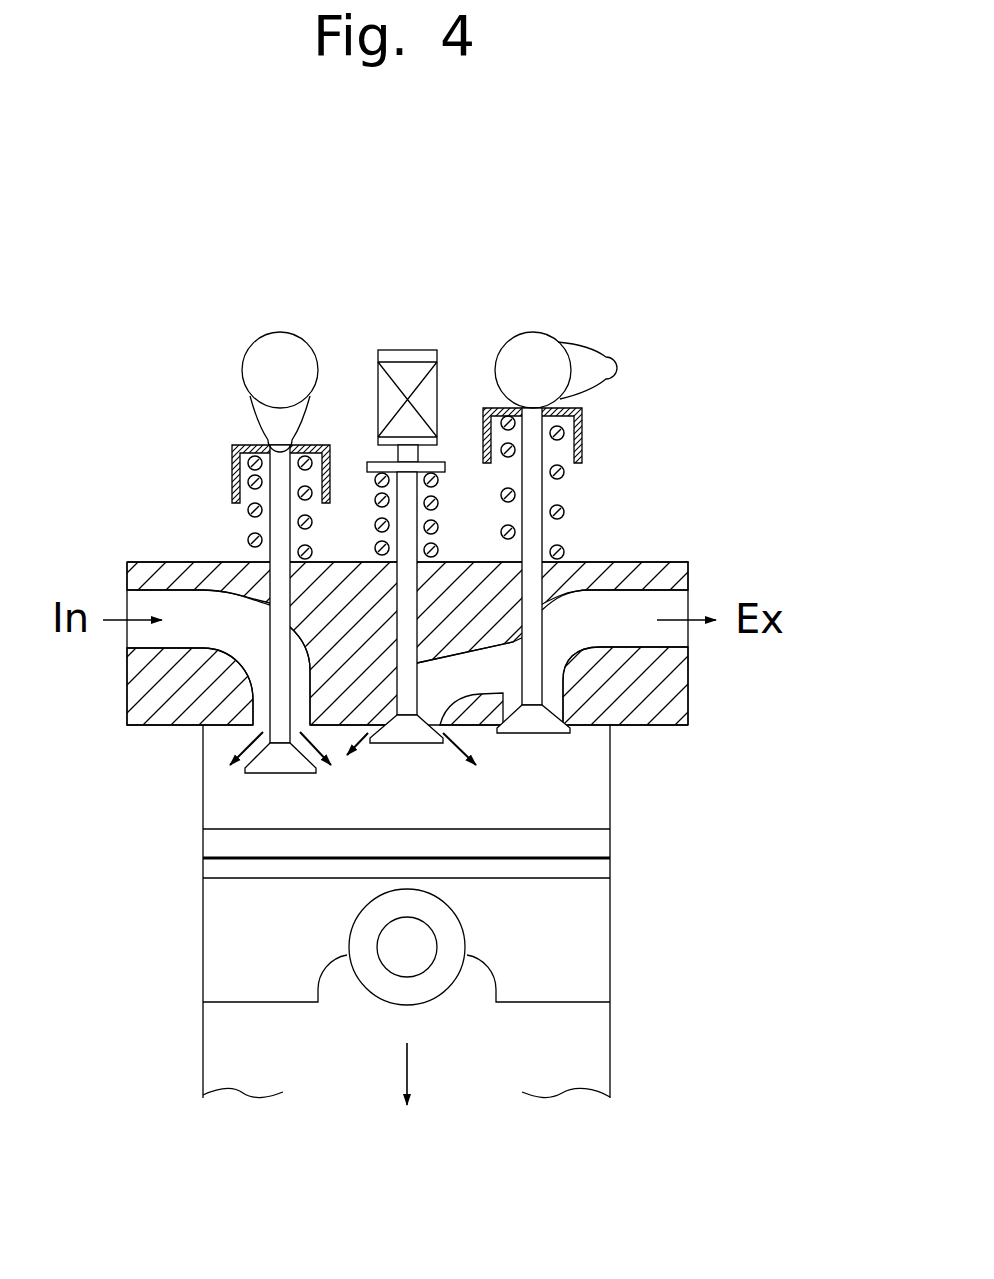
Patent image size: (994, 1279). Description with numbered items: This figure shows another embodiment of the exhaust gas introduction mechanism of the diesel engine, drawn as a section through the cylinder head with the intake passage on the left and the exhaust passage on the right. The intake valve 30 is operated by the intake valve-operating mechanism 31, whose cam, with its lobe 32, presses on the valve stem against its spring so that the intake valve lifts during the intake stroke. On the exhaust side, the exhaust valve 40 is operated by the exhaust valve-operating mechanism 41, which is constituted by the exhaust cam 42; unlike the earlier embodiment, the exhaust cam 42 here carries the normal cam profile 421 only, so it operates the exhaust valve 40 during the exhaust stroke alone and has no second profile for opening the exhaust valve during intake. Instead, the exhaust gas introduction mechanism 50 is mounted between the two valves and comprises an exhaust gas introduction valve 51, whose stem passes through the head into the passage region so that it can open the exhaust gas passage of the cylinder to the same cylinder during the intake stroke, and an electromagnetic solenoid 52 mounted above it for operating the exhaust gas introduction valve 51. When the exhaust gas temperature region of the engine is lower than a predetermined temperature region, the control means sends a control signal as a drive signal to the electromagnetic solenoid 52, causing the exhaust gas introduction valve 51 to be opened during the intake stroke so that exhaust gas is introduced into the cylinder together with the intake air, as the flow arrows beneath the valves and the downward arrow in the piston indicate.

The intake valve 30 is at (275, 525).
The intake valve-operating mechanism 31 is at (262, 352).
The intake cam lobe 32 is at (296, 290).
The exhaust valve 40 is at (542, 493).
The exhaust valve-operating mechanism 41 is at (632, 302).
The exhaust cam 42 is at (580, 356).
The normal cam profile 421 is at (612, 366).
The exhaust gas introduction mechanism 50 is at (410, 448).
The exhaust gas introduction valve 51 is at (403, 623).
The electromagnetic solenoid 52 is at (444, 382).